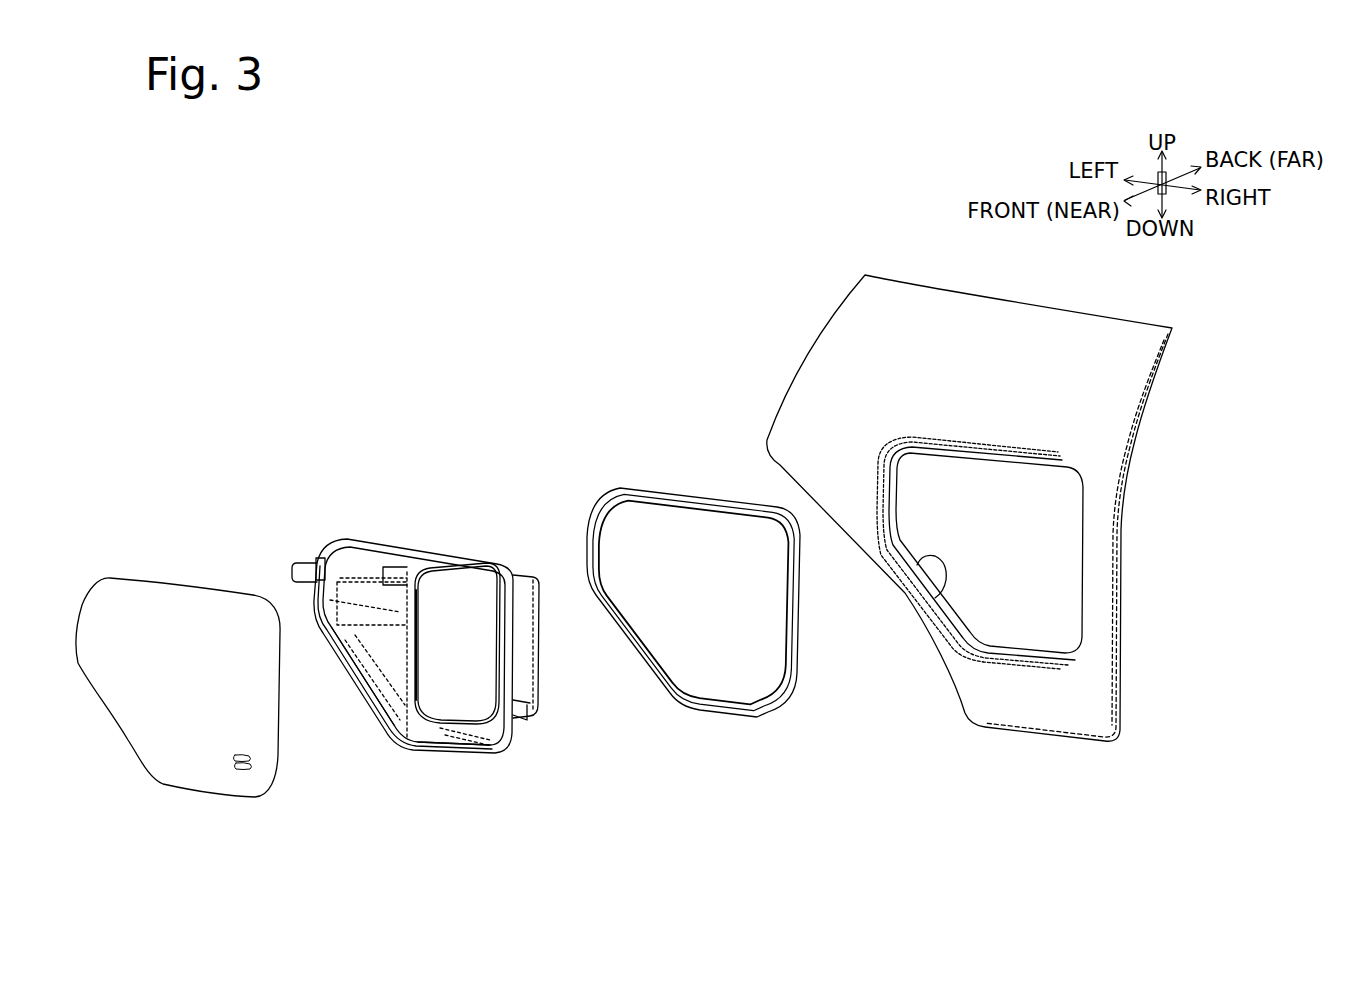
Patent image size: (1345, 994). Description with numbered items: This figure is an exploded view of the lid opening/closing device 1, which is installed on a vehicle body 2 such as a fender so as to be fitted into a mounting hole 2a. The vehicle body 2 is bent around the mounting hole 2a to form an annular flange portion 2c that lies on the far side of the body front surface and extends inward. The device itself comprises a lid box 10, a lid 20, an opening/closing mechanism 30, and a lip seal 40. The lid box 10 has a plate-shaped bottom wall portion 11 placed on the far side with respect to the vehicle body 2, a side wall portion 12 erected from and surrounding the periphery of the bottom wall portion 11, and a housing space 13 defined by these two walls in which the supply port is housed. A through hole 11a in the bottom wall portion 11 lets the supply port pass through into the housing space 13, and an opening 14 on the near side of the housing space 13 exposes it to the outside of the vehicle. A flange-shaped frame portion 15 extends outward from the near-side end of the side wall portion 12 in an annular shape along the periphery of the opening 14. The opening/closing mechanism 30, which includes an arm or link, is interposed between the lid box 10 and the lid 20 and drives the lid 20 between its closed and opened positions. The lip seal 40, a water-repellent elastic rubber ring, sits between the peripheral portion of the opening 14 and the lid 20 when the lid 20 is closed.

The lid opening/closing device 1 is at (355, 482).
The vehicle body 2 is at (845, 352).
The mounting hole 2a is at (947, 583).
The flange portion 2c is at (993, 647).
The lid box 10 is at (410, 550).
The bottom wall portion 11 is at (370, 637).
The through hole 11a is at (413, 637).
The side wall portion 12 is at (405, 712).
The housing space 13 is at (385, 678).
The opening 14 is at (448, 745).
The frame portion 15 is at (503, 747).
The lid 20 is at (150, 623).
The opening/closing mechanism 30 is at (317, 545).
The lip seal 40 is at (668, 493).